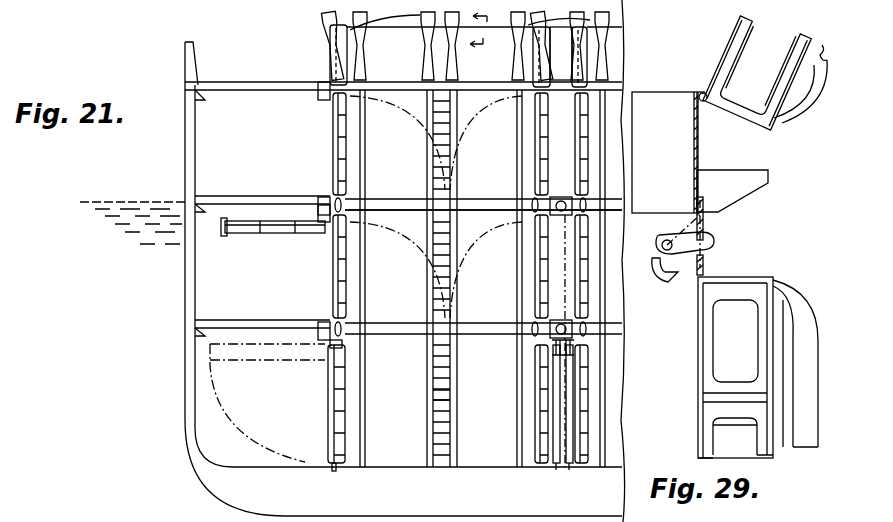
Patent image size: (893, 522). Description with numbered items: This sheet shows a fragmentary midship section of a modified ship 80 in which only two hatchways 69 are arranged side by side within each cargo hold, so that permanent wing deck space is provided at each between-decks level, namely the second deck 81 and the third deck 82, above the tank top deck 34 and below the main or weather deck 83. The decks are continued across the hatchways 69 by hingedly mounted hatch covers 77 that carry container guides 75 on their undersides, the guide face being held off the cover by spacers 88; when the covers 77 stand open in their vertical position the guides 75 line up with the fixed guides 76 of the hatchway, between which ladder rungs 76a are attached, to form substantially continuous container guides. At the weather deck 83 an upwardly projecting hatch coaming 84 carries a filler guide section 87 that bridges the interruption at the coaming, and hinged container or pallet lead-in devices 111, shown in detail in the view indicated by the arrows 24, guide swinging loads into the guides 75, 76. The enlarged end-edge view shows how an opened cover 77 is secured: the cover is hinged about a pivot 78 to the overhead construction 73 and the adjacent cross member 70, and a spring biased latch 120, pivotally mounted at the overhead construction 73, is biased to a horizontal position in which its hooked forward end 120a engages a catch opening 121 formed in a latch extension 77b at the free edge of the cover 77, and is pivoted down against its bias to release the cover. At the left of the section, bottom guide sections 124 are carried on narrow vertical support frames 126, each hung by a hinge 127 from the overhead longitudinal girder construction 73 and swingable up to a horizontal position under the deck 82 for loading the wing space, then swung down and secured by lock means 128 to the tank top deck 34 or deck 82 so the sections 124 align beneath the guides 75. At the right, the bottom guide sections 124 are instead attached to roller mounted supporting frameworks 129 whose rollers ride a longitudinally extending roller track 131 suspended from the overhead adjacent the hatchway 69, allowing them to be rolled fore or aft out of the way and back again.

In FIG. 21, the container or pallet lead-in device detail reference 24 is at (488, 30).
In FIG. 21, the tank top deck 34 is at (392, 462).
In FIG. 21, the hatchway 69 is at (403, 291).
In FIG. 29, the hatchway 69 is at (799, 242).
In FIG. 21, the cross beam 70 is at (395, 323).
In FIG. 29, the cross beam 70 is at (700, 134).
In FIG. 21, the overhead longitudinal girder construction 73 is at (320, 82).
In FIG. 29, the overhead longitudinal girder construction 73 is at (672, 147).
In FIG. 21, the container guide 75 is at (348, 142).
In FIG. 29, the container guide 75 is at (805, 110).
In FIG. 21, the fixed guide 76 is at (422, 157).
In FIG. 21, the ladder rungs 76a is at (433, 401).
In FIG. 21, the hatch cover 77 is at (333, 140).
In FIG. 29, the hatch cover 77 is at (727, 31).
In FIG. 29, the latch extension 77b is at (706, 220).
In FIG. 29, the pivot pin 78 is at (702, 92).
In FIG. 21, the ship 80 is at (185, 403).
In FIG. 21, the second deck 81 is at (253, 196).
In FIG. 21, the third deck 82 is at (260, 320).
In FIG. 21, the main or weather deck 83 is at (258, 72).
In FIG. 21, the hatch coaming 84 is at (330, 42).
In FIG. 21, the filler guide section 87 is at (445, 70).
In FIG. 29, the spacer 88 is at (760, 405).
In FIG. 21, the container or pallet lead-in device 111 is at (325, 20).
In FIG. 29, the spring biased latch 120 is at (673, 278).
In FIG. 29, the hooked forward end 120a is at (714, 240).
In FIG. 29, the catch opening 121 is at (706, 260).
In FIG. 21, the bottom guide section 124 is at (250, 235).
In FIG. 21, the support frame 126 is at (240, 221).
In FIG. 21, the hinge 127 is at (322, 225).
In FIG. 21, the lock means 128 is at (223, 236).
In FIG. 21, the roller mounted supporting framework 129 is at (553, 438).
In FIG. 21, the roller track 131 is at (552, 348).